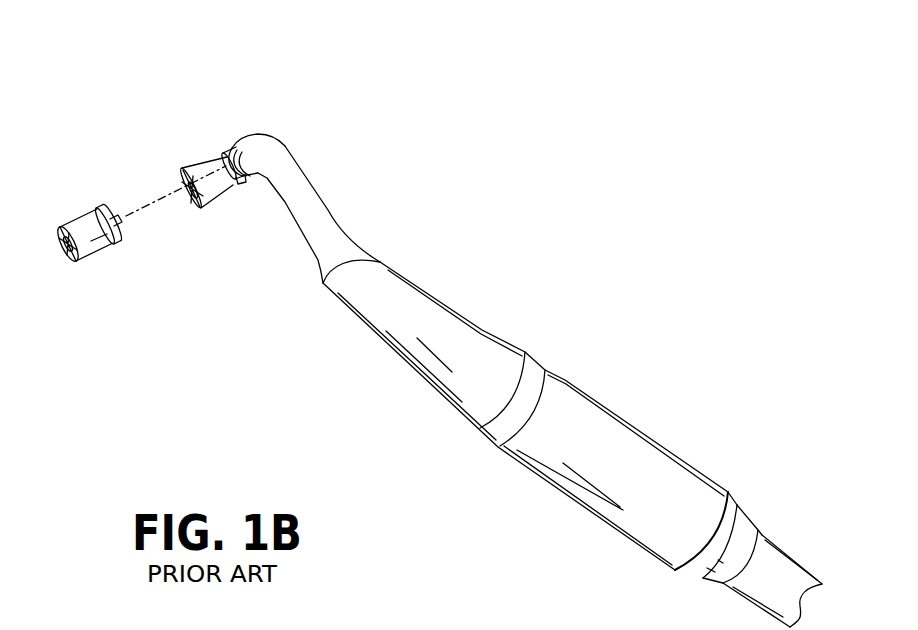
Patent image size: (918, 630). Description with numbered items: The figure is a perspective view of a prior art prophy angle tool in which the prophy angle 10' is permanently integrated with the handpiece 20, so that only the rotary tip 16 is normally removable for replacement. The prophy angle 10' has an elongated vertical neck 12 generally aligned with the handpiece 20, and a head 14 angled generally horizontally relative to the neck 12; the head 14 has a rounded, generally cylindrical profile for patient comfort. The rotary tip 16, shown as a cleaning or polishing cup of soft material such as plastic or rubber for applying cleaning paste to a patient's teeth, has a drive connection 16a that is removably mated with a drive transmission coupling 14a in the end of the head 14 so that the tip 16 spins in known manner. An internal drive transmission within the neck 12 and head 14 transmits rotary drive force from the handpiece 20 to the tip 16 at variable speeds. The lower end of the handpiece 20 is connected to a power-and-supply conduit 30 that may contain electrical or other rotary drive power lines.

The prophy angle 10' is at (502, 381).
The neck 12 is at (305, 202).
The head 14 is at (267, 147).
The drive transmission coupling 14a is at (237, 149).
The rotary tip 16 is at (80, 230).
The drive connection 16a is at (120, 217).
The handpiece 20 is at (613, 443).
The power-and-supply conduit 30 is at (780, 574).